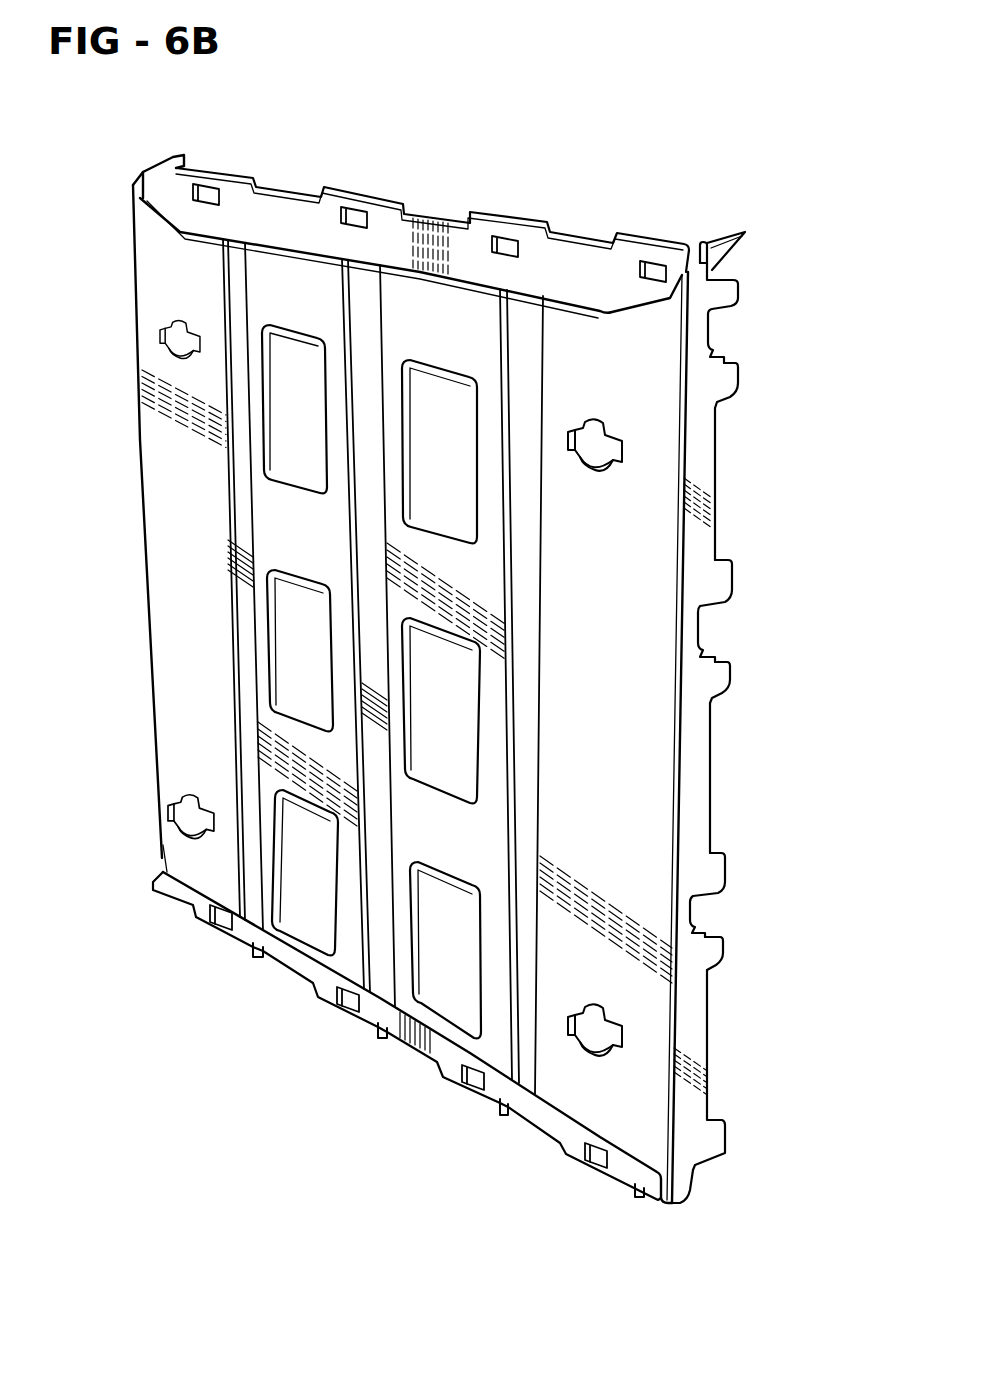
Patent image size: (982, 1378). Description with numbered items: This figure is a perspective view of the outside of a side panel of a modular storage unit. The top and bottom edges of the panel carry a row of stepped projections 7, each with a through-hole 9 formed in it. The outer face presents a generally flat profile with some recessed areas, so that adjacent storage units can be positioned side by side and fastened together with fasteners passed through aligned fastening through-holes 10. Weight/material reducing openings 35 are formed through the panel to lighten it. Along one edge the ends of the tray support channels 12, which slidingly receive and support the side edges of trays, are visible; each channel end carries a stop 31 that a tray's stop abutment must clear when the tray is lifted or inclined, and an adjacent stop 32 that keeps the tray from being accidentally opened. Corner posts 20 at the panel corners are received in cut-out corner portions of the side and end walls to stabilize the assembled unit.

The stepped projections 7 is at (347, 190).
The through-holes 9 is at (203, 186).
The fastening through-holes 10 is at (186, 326).
The tray support channels 12 is at (727, 320).
The corner posts 20 is at (153, 890).
The stops 31 is at (719, 351).
The adjacent stops 32 is at (739, 370).
The weight/material reducing openings 35 is at (371, 681).